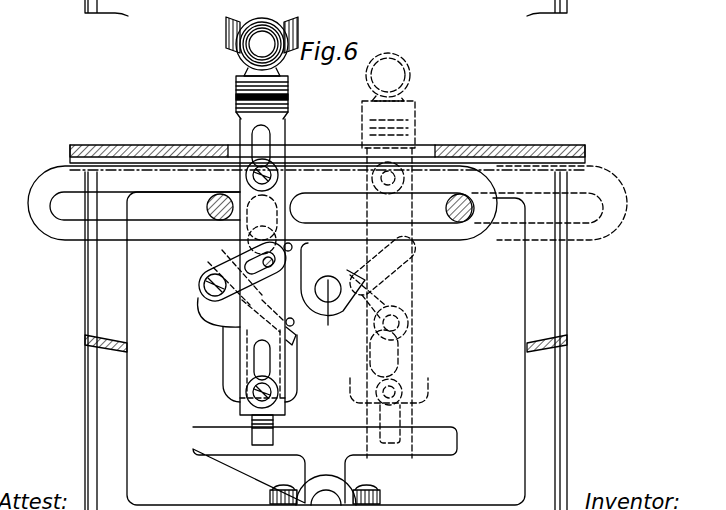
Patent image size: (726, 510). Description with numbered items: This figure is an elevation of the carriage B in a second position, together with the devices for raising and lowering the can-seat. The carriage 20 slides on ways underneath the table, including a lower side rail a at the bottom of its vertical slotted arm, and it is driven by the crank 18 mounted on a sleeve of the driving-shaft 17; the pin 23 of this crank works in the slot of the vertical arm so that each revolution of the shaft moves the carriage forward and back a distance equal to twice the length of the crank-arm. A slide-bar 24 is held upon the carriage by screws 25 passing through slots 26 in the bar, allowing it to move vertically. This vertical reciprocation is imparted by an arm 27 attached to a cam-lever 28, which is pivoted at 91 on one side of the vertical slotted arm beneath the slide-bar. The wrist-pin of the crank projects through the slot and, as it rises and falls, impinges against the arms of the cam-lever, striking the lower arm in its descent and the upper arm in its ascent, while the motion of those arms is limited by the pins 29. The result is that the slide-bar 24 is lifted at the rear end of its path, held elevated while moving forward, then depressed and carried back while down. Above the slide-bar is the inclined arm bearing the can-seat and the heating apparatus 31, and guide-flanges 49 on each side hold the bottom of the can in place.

The guide-flange 49 is at (273, 37).
The heating apparatus 31 is at (248, 83).
The slot 26 is at (258, 137).
The screw 25 is at (270, 170).
The carriage B is at (327, 167).
The pin 23 is at (260, 247).
The carriage 20 is at (340, 217).
The pin 29 is at (290, 244).
The arm 27 is at (219, 274).
The pivot 91 is at (205, 290).
The crank 18 is at (333, 284).
The cam-lever 28 is at (228, 306).
The slide-bar 24 is at (256, 325).
The driving-shaft 17 is at (373, 289).
The lower side rail a is at (325, 465).